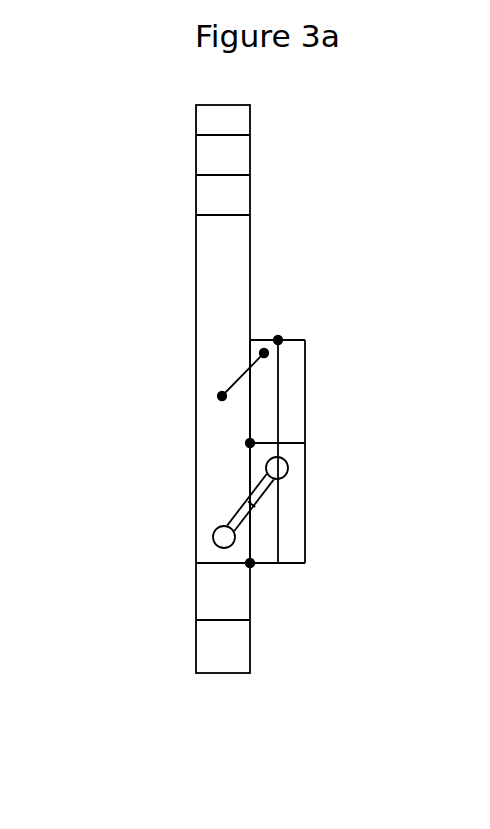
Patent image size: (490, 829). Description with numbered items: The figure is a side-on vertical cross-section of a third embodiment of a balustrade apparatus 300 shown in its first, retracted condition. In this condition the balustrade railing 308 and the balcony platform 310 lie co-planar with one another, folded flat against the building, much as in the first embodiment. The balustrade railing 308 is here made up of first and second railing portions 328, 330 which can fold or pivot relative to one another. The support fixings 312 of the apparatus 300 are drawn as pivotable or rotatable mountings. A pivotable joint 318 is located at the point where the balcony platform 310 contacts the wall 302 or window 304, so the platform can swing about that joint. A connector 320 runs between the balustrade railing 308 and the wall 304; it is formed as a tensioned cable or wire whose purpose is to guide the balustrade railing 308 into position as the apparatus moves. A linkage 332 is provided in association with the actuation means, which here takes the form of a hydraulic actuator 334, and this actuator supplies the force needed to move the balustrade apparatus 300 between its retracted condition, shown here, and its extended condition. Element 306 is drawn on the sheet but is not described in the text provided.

The balustrade apparatus 300 is at (384, 214).
The wall 302 is at (252, 190).
The window 304 is at (205, 268).
The Housing frame 306 is at (327, 407).
The balustrade railing 308 is at (296, 327).
The balcony platform 310 is at (294, 560).
The support fixings 312 is at (213, 398).
The pivotable joint 318 is at (252, 570).
The connector 320 is at (233, 375).
The first railing portion 328 is at (262, 336).
The second railing portion 330 is at (312, 362).
The linkage 332 is at (275, 484).
The hydraulic actuator 334 is at (252, 518).